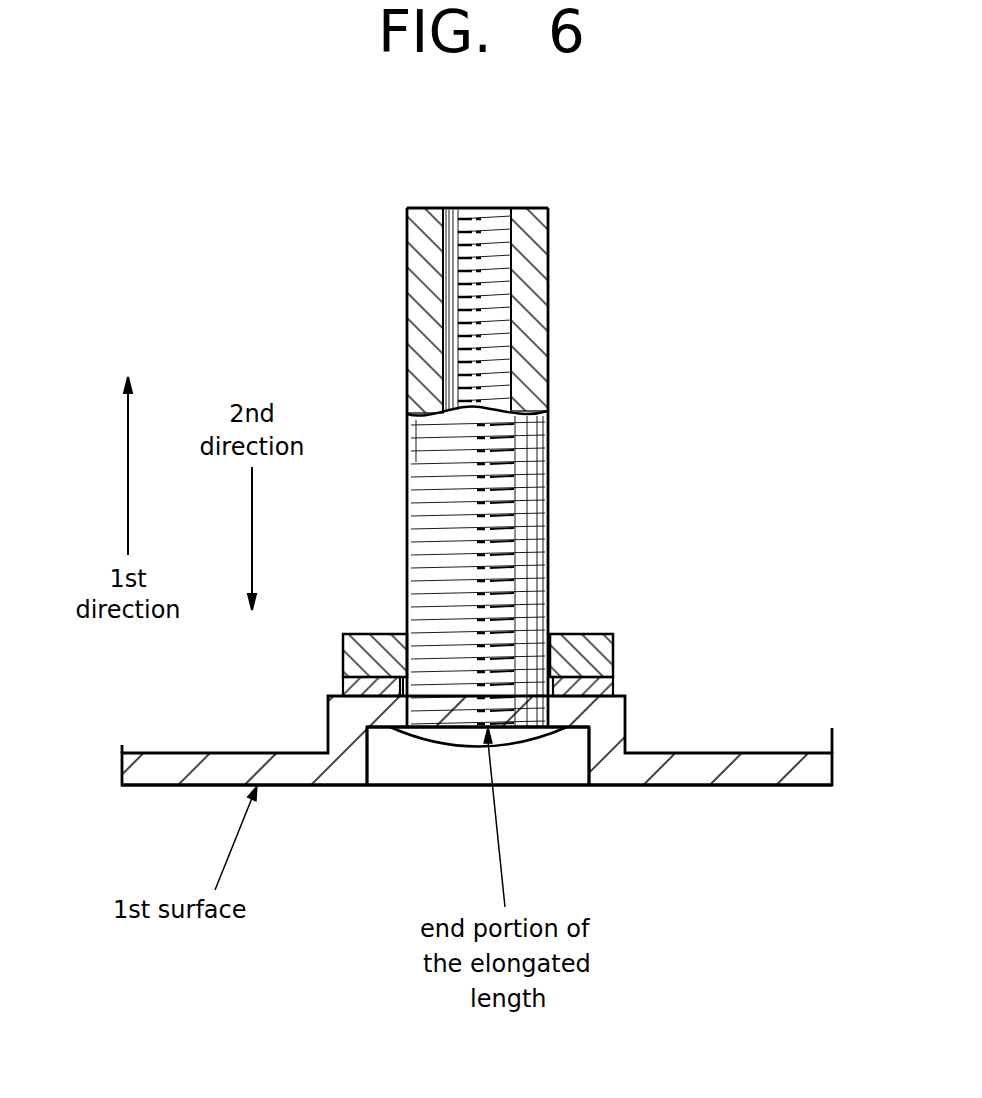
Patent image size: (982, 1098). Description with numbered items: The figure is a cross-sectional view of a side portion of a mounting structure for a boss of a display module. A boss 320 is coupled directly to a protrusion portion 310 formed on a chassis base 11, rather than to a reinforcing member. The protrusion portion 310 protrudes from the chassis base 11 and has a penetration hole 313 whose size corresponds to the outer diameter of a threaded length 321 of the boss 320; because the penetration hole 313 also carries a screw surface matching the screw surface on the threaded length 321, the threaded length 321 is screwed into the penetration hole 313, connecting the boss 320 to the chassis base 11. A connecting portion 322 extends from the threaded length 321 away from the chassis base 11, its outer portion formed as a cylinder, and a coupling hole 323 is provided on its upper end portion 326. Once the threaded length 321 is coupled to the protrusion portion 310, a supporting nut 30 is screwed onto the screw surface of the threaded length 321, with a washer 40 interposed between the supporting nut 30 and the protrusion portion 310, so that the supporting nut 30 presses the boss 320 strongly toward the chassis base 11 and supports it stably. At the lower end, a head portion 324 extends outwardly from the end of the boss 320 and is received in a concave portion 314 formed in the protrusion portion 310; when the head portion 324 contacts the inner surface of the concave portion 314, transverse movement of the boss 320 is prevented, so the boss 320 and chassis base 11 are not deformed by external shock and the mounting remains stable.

The chassis base 11 is at (807, 763).
The supporting nut 30 is at (613, 637).
The washer 40 is at (613, 683).
The protrusion portion 310 is at (638, 702).
The penetration hole 313 is at (430, 727).
The concave portion 314 is at (587, 748).
The boss 320 is at (566, 421).
The threaded length 321 is at (548, 612).
The connecting portion 322 is at (551, 485).
The coupling hole 323 is at (492, 218).
The head portion 324 is at (520, 742).
The upper end portion 326 is at (418, 307).